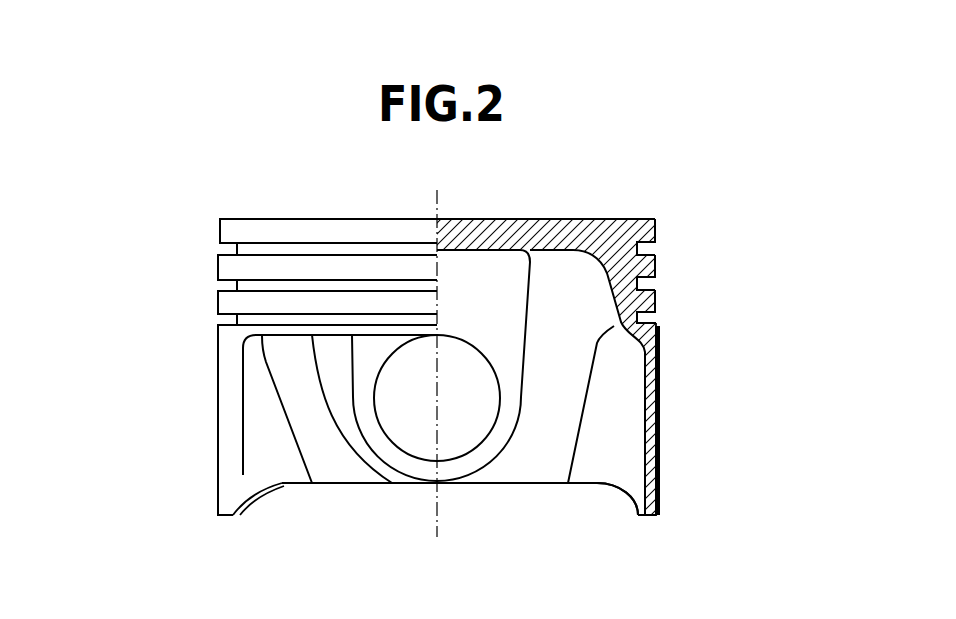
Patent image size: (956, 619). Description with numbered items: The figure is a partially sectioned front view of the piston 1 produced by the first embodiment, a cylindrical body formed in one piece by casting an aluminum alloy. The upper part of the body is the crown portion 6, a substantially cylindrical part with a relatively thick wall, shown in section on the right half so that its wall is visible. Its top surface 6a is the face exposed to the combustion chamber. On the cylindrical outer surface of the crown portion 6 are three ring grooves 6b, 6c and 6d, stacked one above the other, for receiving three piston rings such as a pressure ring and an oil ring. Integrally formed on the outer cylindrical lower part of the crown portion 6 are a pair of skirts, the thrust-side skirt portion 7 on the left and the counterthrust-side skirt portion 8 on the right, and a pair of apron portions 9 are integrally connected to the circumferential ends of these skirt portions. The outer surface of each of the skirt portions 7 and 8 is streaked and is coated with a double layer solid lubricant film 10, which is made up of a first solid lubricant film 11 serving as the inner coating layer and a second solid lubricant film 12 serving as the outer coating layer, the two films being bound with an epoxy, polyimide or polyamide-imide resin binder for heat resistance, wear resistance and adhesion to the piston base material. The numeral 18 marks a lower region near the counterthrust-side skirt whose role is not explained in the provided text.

The piston 1 is at (527, 346).
The crown portion 6 is at (531, 328).
The top surface 6a is at (518, 218).
The ring groove 6b is at (648, 248).
The ring groove 6c is at (648, 285).
The ring groove 6d is at (648, 320).
The thrust-side skirt portion 7 is at (218, 404).
The counterthrust-side skirt portion 8 is at (650, 390).
The apron portion 9 is at (262, 458).
The double layer solid lubricant film 10 is at (437, 419).
The first solid lubricant film 11 is at (327, 473).
The second solid lubricant film 12 is at (522, 465).
The lower end of skirt 18 is at (610, 467).